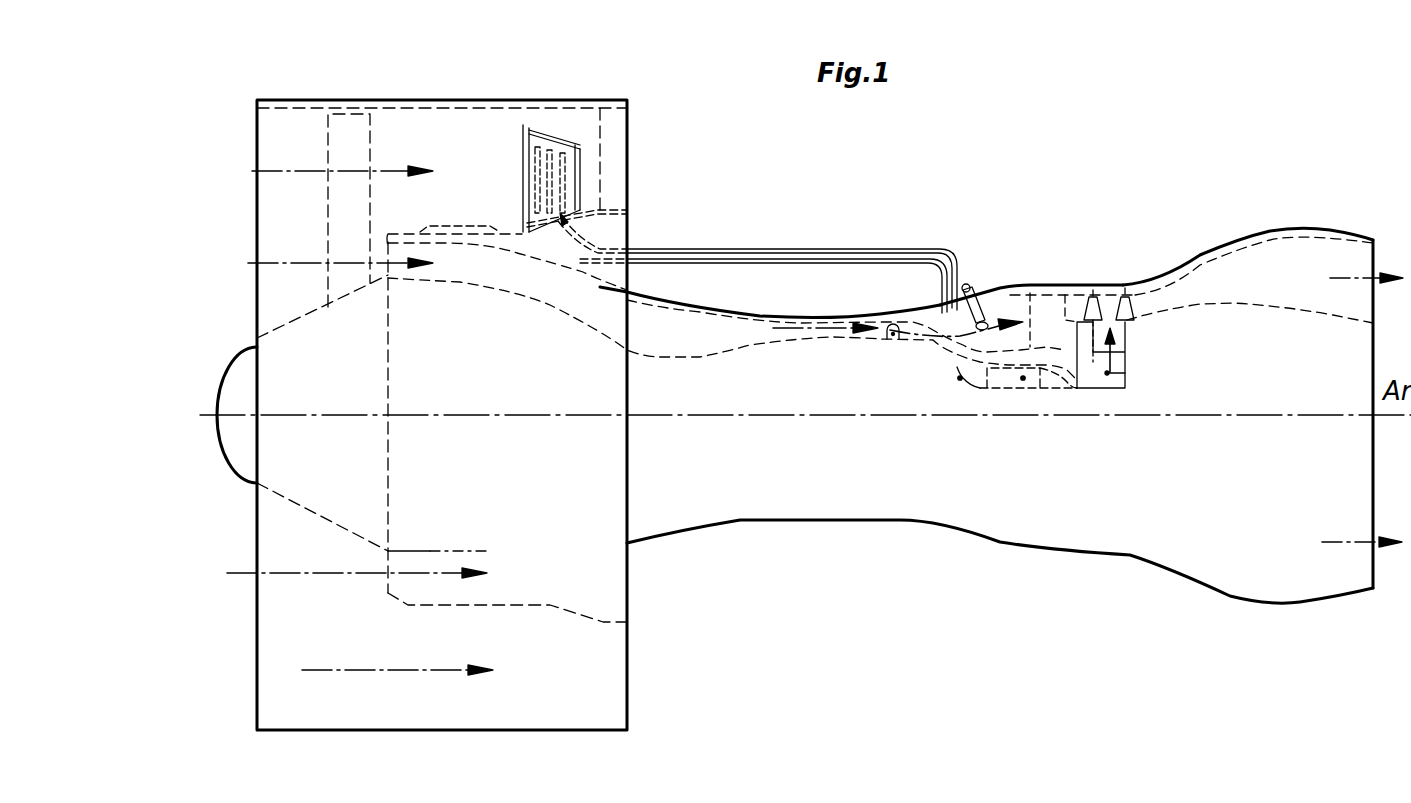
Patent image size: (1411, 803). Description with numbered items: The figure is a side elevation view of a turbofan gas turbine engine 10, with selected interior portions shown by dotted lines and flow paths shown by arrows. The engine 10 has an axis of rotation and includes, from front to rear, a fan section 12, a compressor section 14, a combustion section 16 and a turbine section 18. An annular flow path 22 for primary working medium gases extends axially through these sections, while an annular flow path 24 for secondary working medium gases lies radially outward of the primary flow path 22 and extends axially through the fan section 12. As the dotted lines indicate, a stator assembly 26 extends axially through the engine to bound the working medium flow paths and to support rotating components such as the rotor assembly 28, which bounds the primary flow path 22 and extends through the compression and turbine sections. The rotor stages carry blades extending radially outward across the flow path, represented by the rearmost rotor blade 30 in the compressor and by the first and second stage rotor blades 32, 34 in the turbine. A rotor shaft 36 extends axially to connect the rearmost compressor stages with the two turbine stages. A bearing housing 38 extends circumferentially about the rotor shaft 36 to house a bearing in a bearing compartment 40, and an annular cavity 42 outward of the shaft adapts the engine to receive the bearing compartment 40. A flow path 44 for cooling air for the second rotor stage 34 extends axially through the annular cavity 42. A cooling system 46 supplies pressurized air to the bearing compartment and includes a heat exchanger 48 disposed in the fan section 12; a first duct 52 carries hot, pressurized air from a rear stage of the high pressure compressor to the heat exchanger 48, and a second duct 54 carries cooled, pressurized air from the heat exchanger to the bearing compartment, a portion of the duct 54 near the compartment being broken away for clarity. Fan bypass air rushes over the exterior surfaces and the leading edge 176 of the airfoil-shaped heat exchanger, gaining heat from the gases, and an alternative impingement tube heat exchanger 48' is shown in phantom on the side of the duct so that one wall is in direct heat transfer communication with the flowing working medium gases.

The turbofan gas turbine engine 10 is at (690, 170).
The fan section 12 is at (489, 93).
The compressor section 14 is at (770, 290).
The combustion section 16 is at (1052, 280).
The turbine section 18 is at (1160, 268).
The annular flow path for primary working medium gases 22 is at (248, 263).
The annular flow path for secondary working medium gases 24 is at (252, 172).
The stator assembly 26 is at (1027, 283).
The rotor assembly 28 is at (837, 337).
The rearmost rotor blade 30 is at (890, 345).
The first stage rotor blade 32 is at (1093, 290).
The second stage rotor blade 34 is at (1127, 287).
The rotor shaft 36 is at (960, 378).
The bearing housing 38 is at (1042, 368).
The bearing compartment 40 is at (1023, 378).
The annular cavity 42 is at (963, 367).
The flow path for cooling air 44 is at (1107, 373).
The cooling system 46 is at (725, 198).
The heat exchanger 48 is at (609, 185).
The heat exchanger 48' is at (460, 195).
The first duct 52 is at (866, 262).
The second duct 54 is at (834, 250).
The edge of the airfoil shaped heat exchanger 176 is at (523, 130).